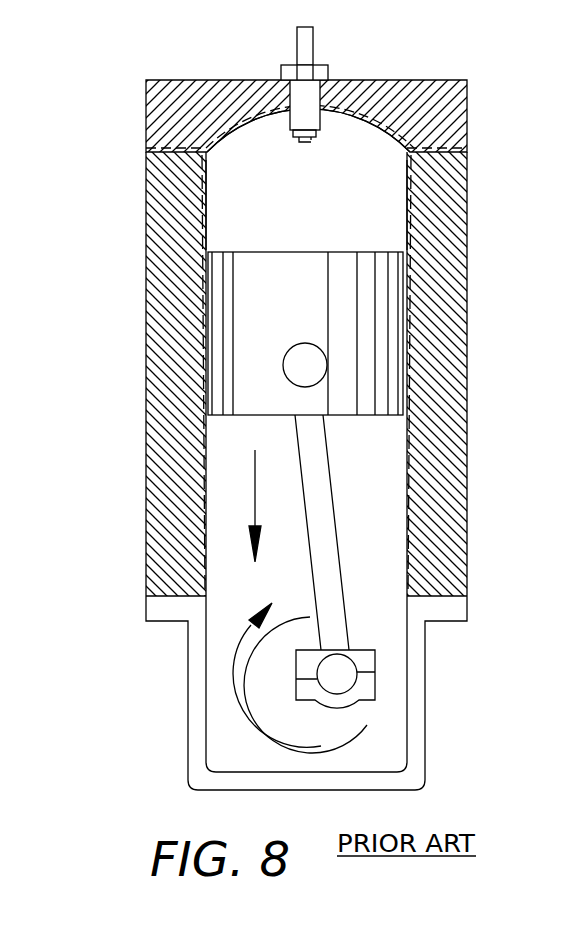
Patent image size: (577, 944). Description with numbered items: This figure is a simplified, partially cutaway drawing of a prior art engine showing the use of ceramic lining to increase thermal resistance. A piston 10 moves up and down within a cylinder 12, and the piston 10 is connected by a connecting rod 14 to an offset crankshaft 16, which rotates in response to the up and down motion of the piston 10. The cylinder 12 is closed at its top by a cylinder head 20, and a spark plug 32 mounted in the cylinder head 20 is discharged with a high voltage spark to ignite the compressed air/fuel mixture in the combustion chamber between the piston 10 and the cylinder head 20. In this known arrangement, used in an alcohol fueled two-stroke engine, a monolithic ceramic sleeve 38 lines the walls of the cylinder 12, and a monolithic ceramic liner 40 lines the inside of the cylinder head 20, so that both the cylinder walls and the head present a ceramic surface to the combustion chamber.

The piston 10 is at (365, 298).
The cylinder 12 is at (470, 418).
The connecting rod 14 is at (318, 512).
The crankshaft 16 is at (298, 723).
The cylinder head 20 is at (467, 98).
The spark plug 32 is at (305, 52).
The monolithic ceramic sleeve 38 is at (405, 213).
The monolithic ceramic liner 40 is at (355, 122).